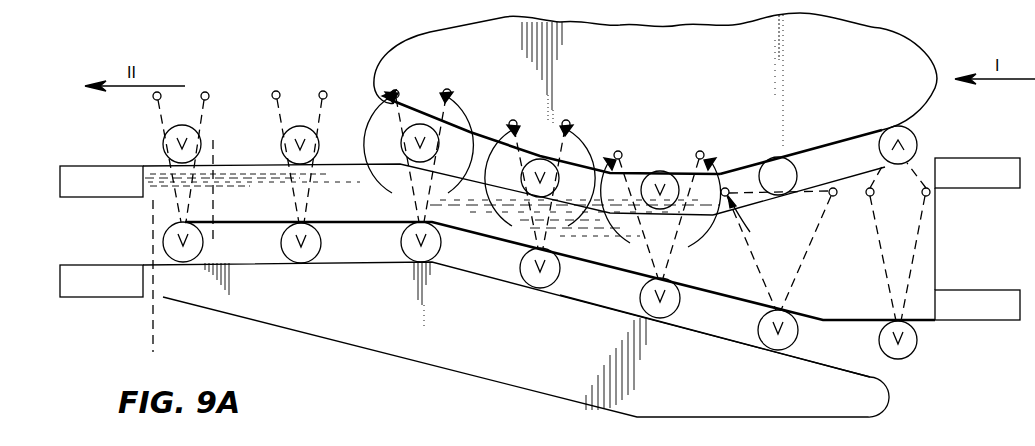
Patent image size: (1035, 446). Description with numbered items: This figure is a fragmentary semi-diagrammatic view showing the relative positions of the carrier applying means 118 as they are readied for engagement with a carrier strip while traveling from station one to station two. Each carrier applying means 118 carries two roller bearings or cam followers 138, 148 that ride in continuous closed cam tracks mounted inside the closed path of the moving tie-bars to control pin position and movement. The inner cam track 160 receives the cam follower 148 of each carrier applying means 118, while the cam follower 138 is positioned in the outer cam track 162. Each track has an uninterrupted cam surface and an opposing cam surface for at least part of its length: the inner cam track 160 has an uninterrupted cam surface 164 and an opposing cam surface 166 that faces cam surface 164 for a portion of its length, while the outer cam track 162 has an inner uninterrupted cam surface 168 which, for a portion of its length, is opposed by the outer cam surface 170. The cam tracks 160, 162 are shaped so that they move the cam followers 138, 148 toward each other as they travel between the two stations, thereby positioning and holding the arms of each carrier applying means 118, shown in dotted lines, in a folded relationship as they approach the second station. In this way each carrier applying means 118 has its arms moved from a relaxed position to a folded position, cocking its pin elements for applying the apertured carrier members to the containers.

The carrier applying means 118 is at (942, 245).
The roller bearing or cam follower 138 is at (905, 347).
The roller bearing or cam follower 148 is at (912, 143).
The inner cam track 160 is at (487, 146).
The outer cam track 162 is at (258, 250).
The uninterrupted cam surface 164 is at (243, 163).
The opposing cam surface 166 is at (823, 147).
The inner uninterrupted cam surface 168 is at (342, 222).
The outer cam surface 170 is at (720, 333).